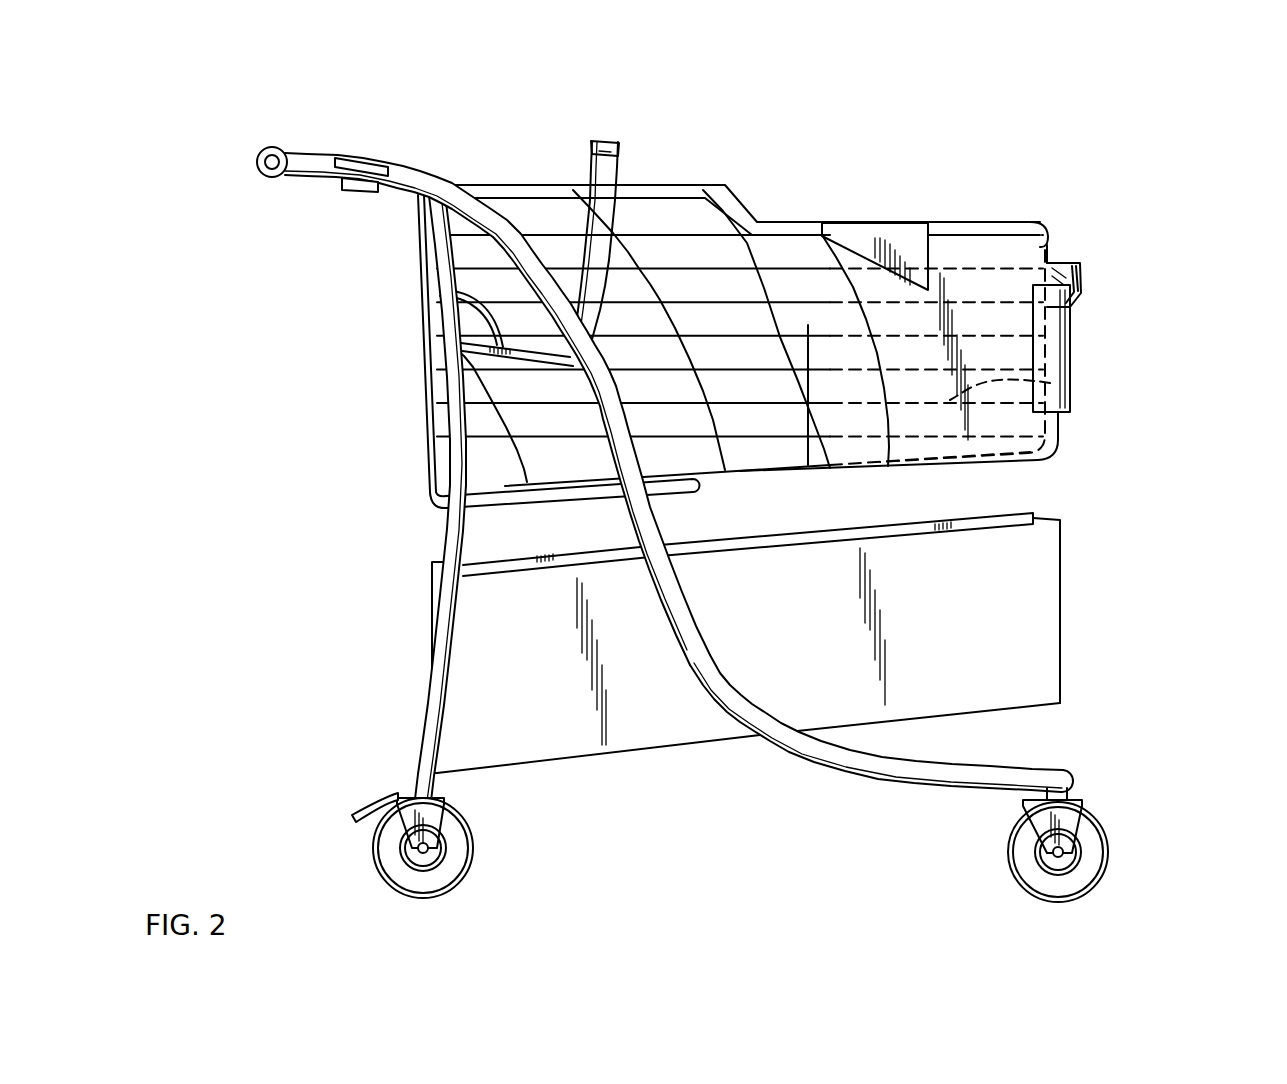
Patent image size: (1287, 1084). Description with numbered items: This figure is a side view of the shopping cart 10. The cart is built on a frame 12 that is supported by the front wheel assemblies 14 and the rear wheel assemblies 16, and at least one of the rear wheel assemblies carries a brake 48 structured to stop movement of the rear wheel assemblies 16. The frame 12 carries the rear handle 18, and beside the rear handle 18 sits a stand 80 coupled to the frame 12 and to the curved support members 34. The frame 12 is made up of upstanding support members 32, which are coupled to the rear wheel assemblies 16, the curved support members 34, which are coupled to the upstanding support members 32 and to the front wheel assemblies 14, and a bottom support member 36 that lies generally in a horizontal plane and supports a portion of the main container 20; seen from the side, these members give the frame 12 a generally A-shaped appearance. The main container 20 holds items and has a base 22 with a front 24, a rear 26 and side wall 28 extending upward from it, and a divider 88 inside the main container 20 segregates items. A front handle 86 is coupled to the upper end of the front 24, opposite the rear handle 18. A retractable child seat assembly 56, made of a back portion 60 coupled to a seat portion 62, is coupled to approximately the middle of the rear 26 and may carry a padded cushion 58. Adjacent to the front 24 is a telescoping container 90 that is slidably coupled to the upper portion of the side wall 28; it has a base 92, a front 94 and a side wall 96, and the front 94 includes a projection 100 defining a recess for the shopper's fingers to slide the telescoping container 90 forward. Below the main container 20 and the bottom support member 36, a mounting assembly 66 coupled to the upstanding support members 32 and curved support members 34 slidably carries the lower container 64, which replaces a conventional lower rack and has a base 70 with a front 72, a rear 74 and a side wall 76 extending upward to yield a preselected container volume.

The shopping cart 10 is at (763, 178).
The frame 12 is at (386, 518).
The front wheel assemblies 14 is at (1000, 852).
The rear wheel assemblies 16 is at (352, 846).
The rear handle 18 is at (257, 163).
The main container 20 is at (840, 203).
The base 22 is at (840, 466).
The front 24 is at (1083, 262).
The rear 26 is at (425, 410).
The side wall 28 is at (1050, 383).
The upstanding support members 32 is at (422, 720).
The curved support members 34 is at (905, 773).
The bottom support member 36 is at (572, 496).
The brake 48 is at (372, 808).
The child seat assembly 56 is at (497, 163).
The padded cushion 58 is at (587, 227).
The back portion 60 is at (606, 142).
The seat portion 62 is at (440, 290).
The lower container 64 is at (622, 760).
The mounting assembly 66 is at (920, 530).
The base 70 is at (920, 723).
The front 72 is at (1060, 642).
The rear 74 is at (437, 604).
The side wall 76 is at (794, 646).
The stand 80 is at (352, 135).
The front handle 86 is at (1050, 235).
The divider 88 is at (808, 382).
The telescoping container 90 is at (975, 256).
The base 92 is at (985, 462).
The front 94 is at (1070, 342).
The side wall 96 is at (940, 323).
The projection 100 is at (1085, 283).